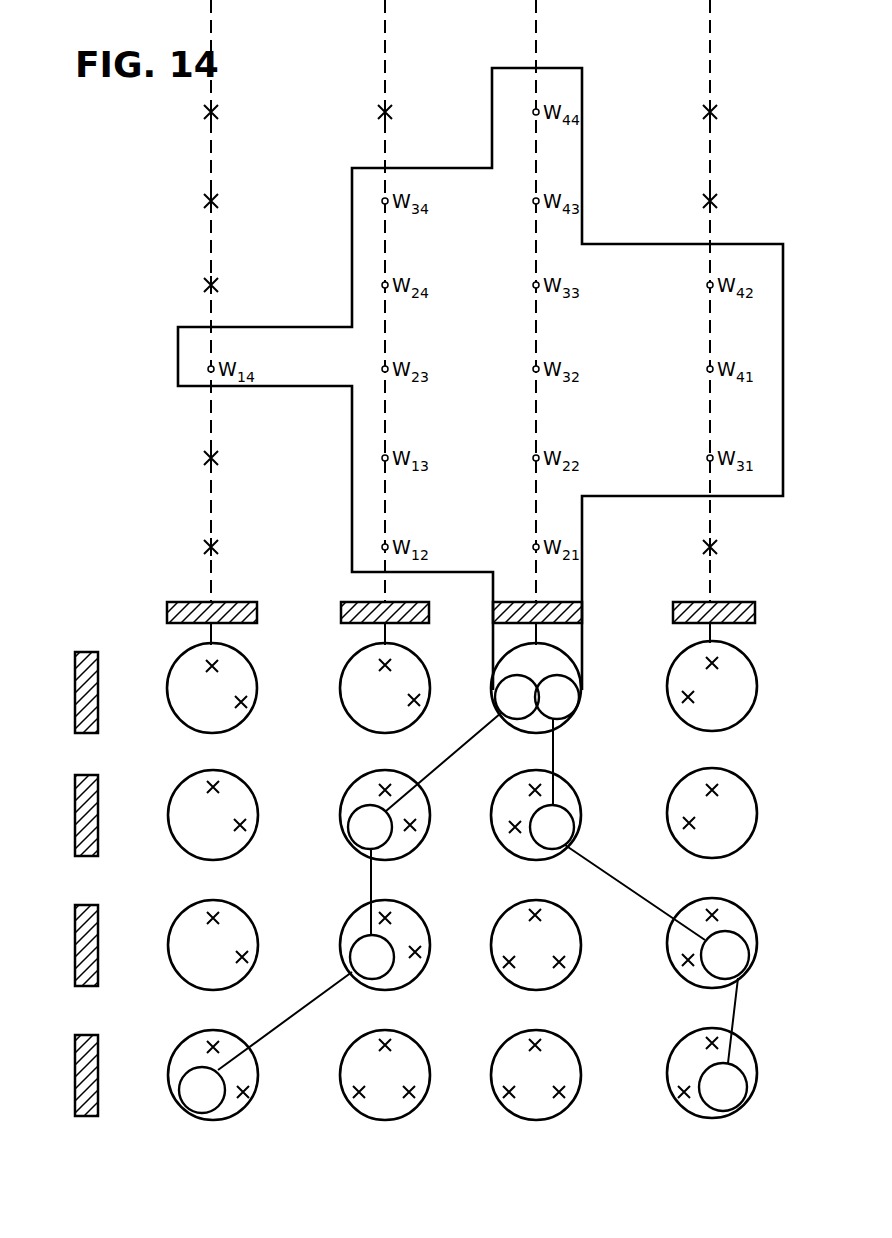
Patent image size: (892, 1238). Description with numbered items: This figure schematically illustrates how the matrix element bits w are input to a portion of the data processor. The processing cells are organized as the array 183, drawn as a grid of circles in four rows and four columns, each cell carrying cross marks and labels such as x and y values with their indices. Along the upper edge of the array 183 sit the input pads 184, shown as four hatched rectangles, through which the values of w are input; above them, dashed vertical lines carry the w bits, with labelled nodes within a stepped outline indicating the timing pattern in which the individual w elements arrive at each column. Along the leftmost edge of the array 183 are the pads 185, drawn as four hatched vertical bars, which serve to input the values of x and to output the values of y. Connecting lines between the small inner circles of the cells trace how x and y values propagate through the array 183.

The array 183 is at (585, 1101).
The input pads 184 is at (155, 591).
The pads 185 is at (85, 640).